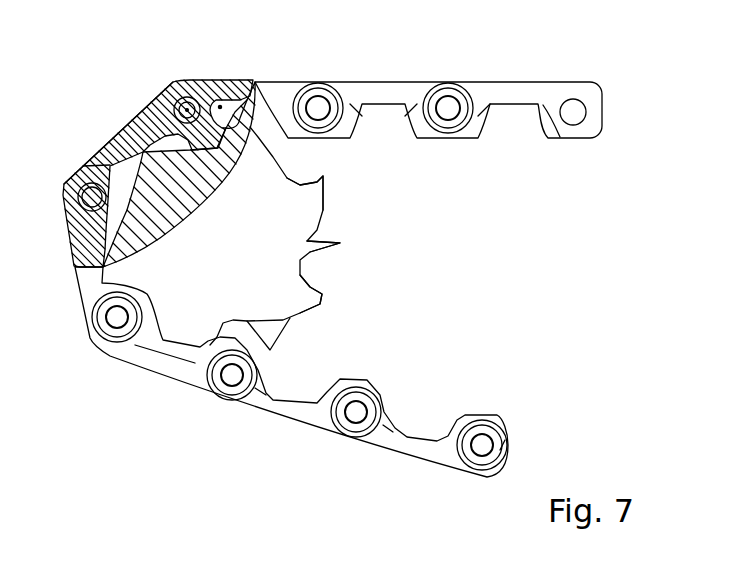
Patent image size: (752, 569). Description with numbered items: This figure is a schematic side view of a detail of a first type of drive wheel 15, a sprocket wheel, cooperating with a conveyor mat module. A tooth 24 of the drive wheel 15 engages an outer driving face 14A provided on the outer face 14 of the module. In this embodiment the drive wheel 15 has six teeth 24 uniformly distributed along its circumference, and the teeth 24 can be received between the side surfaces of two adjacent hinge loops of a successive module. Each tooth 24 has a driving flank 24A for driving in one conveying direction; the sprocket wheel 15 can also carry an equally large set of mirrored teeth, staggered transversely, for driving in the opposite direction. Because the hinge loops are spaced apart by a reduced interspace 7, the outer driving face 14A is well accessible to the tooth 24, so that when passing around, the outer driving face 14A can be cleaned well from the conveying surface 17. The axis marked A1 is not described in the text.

The pivot axis of tensioning arm A1 is at (150, 118).
The outer face 14 is at (213, 79).
The interspace 7 is at (221, 105).
The outer driving face 14A is at (249, 106).
The conveying surface 17 is at (385, 81).
The tooth 24 is at (312, 197).
The driving flank 24A is at (312, 292).
The first type of drive wheel 15 is at (247, 262).